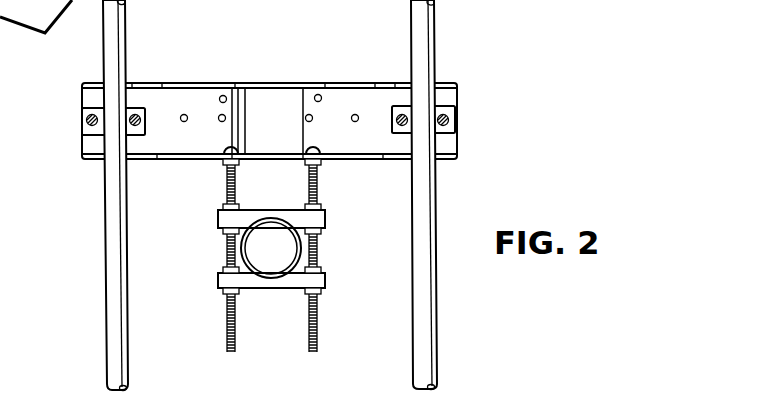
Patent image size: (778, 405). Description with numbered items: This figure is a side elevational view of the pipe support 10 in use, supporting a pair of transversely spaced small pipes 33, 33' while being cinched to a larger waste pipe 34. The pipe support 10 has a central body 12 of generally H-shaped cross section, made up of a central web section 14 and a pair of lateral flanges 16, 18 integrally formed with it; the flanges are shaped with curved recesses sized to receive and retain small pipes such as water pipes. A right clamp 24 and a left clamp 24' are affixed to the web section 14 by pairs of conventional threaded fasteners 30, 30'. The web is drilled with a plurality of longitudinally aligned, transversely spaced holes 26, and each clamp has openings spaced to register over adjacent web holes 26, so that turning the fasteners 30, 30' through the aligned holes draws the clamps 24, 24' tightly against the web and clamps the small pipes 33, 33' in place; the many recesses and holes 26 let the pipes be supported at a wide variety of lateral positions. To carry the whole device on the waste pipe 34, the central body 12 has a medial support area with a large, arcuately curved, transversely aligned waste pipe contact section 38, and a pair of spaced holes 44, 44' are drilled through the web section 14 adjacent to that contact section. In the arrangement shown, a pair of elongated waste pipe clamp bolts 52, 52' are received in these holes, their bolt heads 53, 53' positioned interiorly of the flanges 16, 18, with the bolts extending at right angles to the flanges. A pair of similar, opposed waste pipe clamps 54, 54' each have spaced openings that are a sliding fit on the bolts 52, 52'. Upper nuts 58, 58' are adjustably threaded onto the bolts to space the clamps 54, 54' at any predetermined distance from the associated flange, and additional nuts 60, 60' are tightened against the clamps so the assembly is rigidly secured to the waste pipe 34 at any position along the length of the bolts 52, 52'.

The pipe support 10 is at (360, 41).
The central body 12 is at (182, 82).
The central web section 14 is at (210, 113).
The lateral flange 16 is at (312, 81).
The lateral flange 18 is at (363, 160).
The right clamp 24 is at (436, 88).
The left clamp 24' is at (88, 115).
The web holes 26 is at (184, 122).
The threaded fastener 30 is at (313, 95).
The threaded fastener 30' is at (247, 92).
The small pipe 33 is at (444, 195).
The small pipe 33' is at (133, 195).
The waste pipe 34 is at (320, 268).
The waste pipe contact section 38 is at (267, 103).
The web hole 44 is at (324, 51).
The web hole 44' is at (232, 55).
The waste pipe clamp bolt 52 is at (335, 265).
The waste pipe clamp bolt 52' is at (209, 266).
The bolt head 53 is at (329, 141).
The bolt head 53' is at (203, 161).
The waste pipe clamp 54 is at (271, 325).
The waste pipe clamp 54' is at (271, 207).
The upper nut 58 is at (335, 197).
The upper nut 58' is at (228, 197).
The nut 60 is at (331, 277).
The nut 60' is at (210, 275).